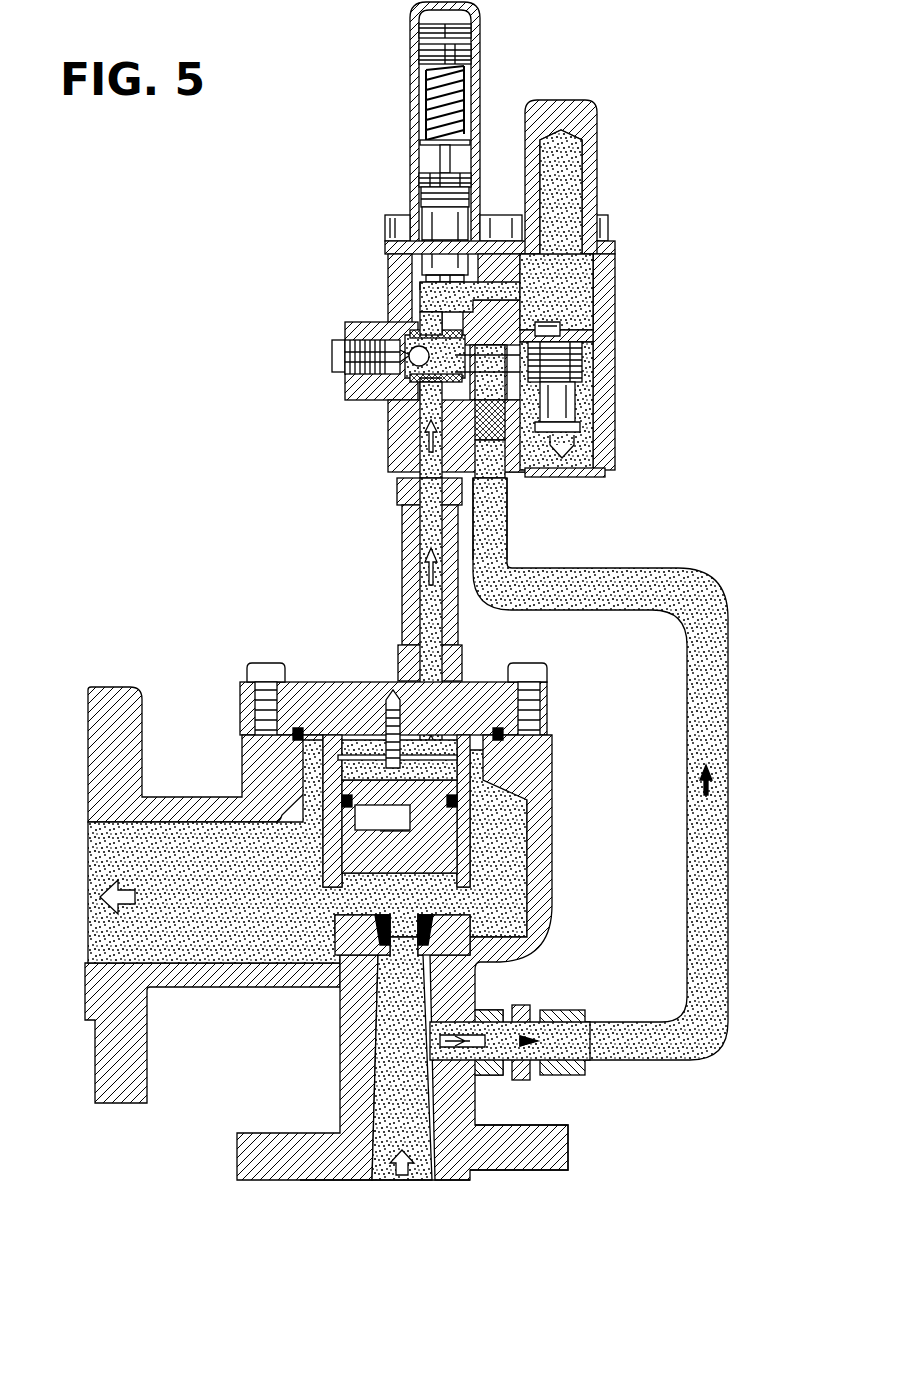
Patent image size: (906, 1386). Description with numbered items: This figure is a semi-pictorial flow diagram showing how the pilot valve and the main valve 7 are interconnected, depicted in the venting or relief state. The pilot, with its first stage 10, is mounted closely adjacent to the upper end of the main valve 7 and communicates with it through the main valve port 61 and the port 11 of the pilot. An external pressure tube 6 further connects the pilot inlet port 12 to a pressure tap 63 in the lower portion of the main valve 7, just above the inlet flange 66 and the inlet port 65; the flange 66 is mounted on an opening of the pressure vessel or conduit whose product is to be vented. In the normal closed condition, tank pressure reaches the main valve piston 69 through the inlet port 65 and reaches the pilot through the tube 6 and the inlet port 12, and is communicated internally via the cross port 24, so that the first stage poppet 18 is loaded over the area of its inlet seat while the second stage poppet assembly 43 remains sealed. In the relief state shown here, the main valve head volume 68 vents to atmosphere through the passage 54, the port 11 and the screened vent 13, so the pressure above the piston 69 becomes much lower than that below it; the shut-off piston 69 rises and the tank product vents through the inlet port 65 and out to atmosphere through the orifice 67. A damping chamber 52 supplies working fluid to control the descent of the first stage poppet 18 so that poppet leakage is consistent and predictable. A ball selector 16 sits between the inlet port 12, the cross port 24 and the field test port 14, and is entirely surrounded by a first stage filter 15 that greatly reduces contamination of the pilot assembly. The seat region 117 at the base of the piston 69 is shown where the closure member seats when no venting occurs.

The external pressure tube 6 is at (732, 603).
The main valve 7 is at (300, 1190).
The first stage 10 is at (433, 172).
The port 11 is at (427, 482).
The inlet port 12 is at (500, 498).
The screened vent 13 is at (562, 423).
The field test port 14 is at (344, 362).
The first stage filter 15 is at (412, 393).
The ball selector 16 is at (405, 350).
The first stage poppet 18 is at (445, 232).
The cross port 24 is at (537, 317).
The second stage poppet assembly 43 is at (565, 392).
The damping chamber 52 is at (562, 170).
The passage 54 is at (538, 360).
The main valve port 61 is at (435, 702).
The pressure tap 63 is at (478, 1066).
The inlet port 65 is at (406, 1183).
The inlet flange 66 is at (536, 1170).
The orifice 67 is at (93, 937).
The main valve head volume 68 is at (358, 750).
The main valve piston 69 is at (399, 826).
The valve seat 117 is at (467, 898).